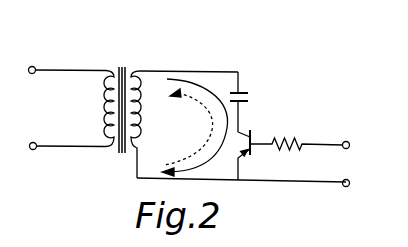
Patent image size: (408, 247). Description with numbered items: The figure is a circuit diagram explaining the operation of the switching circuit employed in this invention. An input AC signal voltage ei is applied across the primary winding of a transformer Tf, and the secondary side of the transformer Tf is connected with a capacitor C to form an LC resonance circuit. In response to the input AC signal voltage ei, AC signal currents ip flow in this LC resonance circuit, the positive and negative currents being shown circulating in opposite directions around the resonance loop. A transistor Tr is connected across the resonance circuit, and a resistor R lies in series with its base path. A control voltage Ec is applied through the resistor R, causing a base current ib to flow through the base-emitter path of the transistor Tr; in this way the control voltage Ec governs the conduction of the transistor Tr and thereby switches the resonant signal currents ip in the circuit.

The input AC signal voltage ei is at (32, 79).
The transformer Tf is at (126, 61).
The AC signal current ip is at (189, 128).
The capacitor C is at (249, 98).
The transistor Tr is at (249, 155).
The resistor R is at (290, 152).
The base current ib is at (302, 127).
The control voltage Ec is at (346, 153).